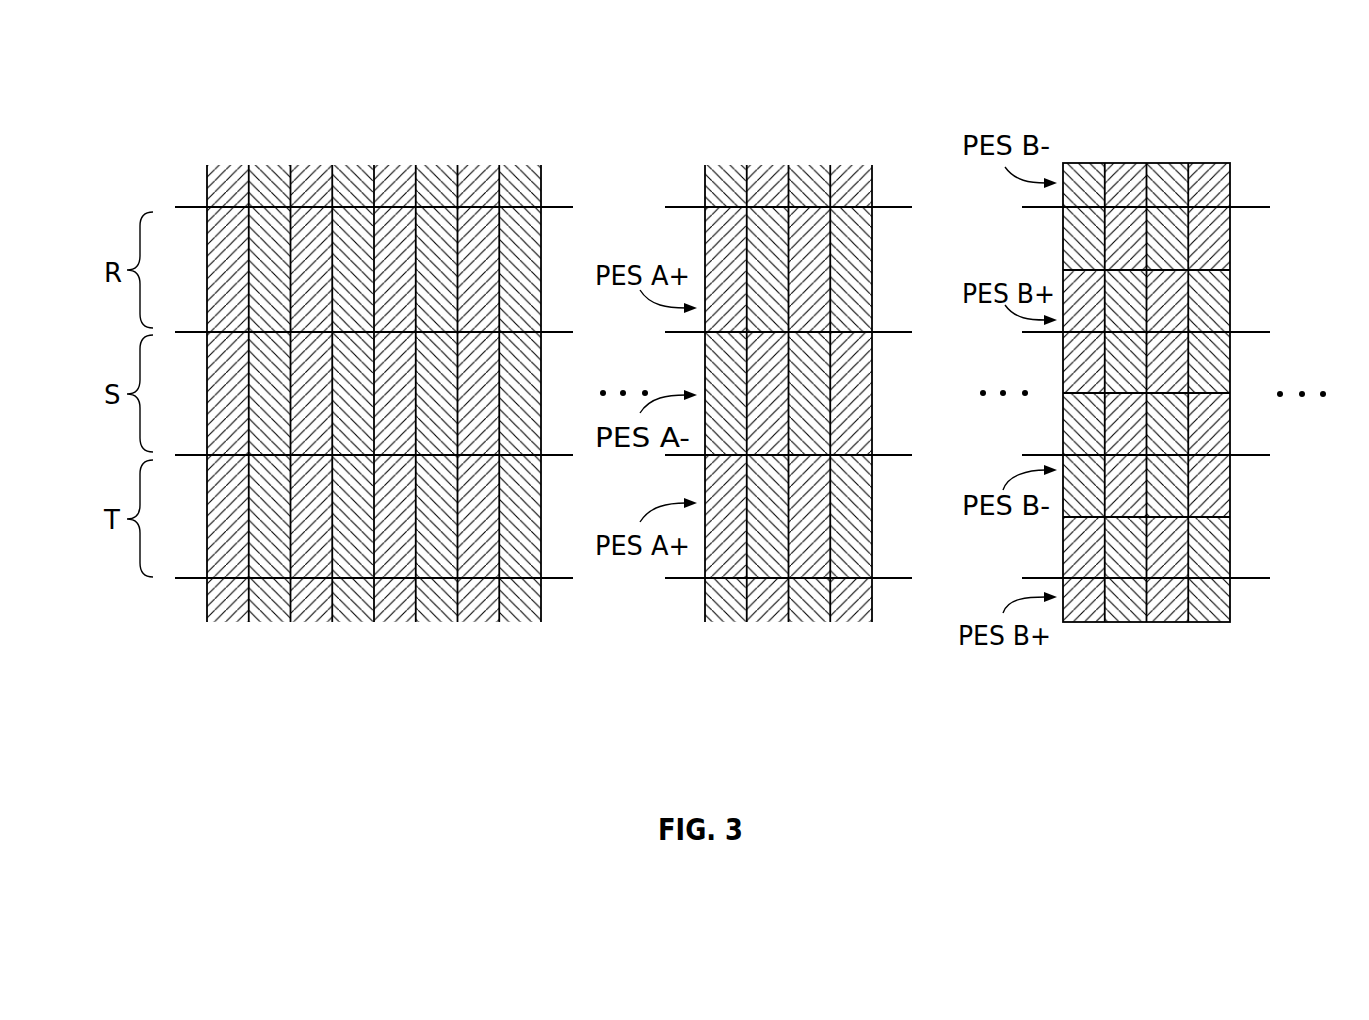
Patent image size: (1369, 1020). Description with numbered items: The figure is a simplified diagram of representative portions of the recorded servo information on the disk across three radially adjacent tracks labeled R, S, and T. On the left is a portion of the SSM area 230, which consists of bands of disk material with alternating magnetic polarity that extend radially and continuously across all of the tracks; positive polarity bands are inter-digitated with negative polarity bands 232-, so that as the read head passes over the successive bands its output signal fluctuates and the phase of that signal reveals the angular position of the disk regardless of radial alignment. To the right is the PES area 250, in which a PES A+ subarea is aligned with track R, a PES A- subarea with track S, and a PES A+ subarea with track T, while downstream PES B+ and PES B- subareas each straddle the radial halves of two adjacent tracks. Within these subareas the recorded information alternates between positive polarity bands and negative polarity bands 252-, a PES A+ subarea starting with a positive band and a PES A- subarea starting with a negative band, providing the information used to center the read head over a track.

The SSM area 230 is at (374, 422).
The negative polarity band 232- is at (437, 180).
The PES area 250 is at (941, 422).
The negative polarity band 252- is at (727, 180).